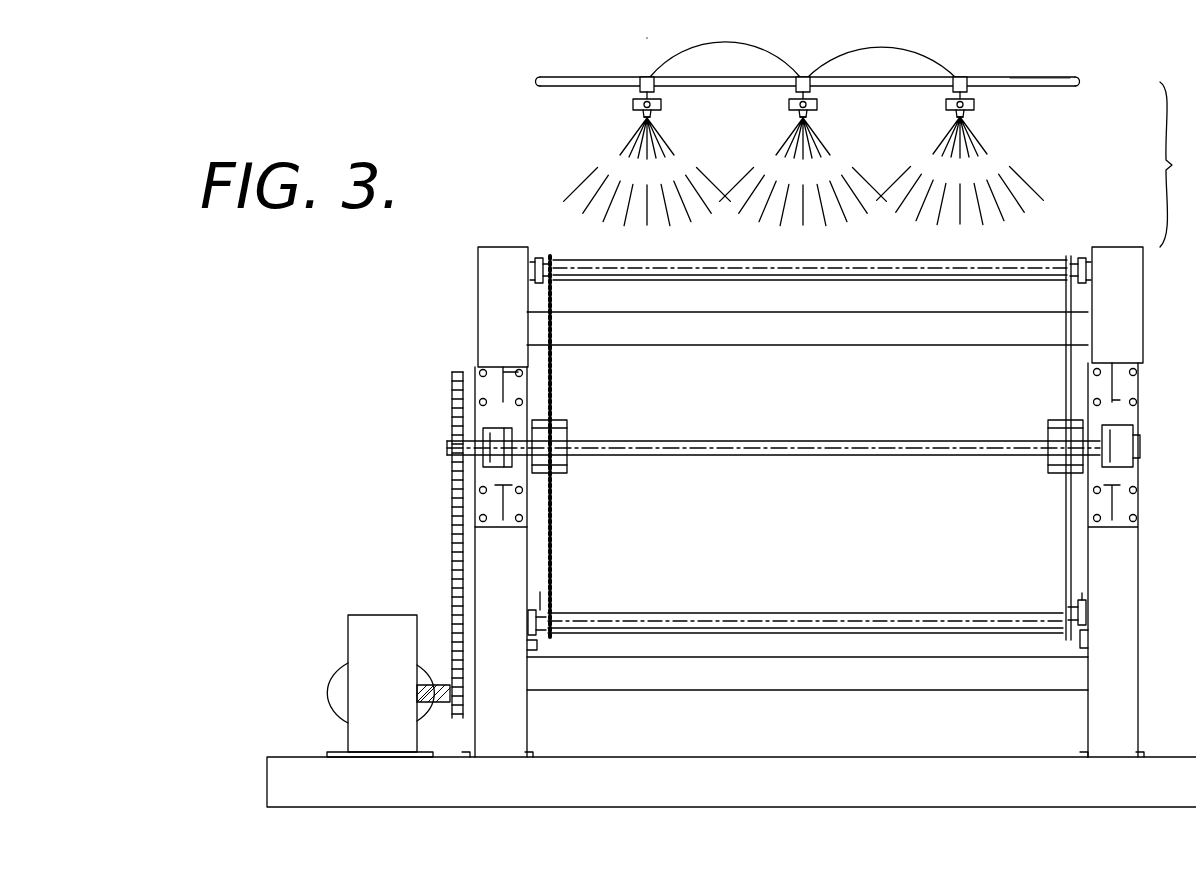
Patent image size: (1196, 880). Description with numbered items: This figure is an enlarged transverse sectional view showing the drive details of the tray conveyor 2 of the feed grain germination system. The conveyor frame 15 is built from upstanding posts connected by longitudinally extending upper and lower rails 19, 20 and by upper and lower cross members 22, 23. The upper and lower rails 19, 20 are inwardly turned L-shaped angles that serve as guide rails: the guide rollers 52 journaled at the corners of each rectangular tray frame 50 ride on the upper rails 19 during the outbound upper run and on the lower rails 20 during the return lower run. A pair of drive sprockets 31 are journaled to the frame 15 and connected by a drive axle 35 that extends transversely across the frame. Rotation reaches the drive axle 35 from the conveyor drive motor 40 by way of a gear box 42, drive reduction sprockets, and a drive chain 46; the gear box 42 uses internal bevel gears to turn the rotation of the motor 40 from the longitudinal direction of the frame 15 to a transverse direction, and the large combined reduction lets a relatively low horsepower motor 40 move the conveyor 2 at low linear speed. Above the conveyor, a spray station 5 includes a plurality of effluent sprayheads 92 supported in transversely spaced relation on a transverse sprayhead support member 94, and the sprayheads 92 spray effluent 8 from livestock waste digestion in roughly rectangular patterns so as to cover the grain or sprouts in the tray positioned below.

The tray conveyor 2 is at (478, 236).
The effluent spray station 5 is at (532, 79).
The effluent 8 is at (598, 175).
The conveyor frame 15 is at (468, 352).
The upper rail 19 is at (528, 292).
The lower rail 20 is at (527, 643).
The upper cross member 22 is at (797, 335).
The lower cross member 23 is at (688, 680).
The drive sprocket 31 is at (555, 542).
The drive axle 35 is at (762, 448).
The conveyor drive motor 40 is at (332, 688).
The gear box 42 is at (378, 615).
The drive chain 46 is at (452, 525).
The tray frame 50 is at (755, 268).
The guide roller 52 is at (540, 255).
The effluent sprayhead 92 is at (657, 104).
The transverse sprayhead support member 94 is at (1024, 78).